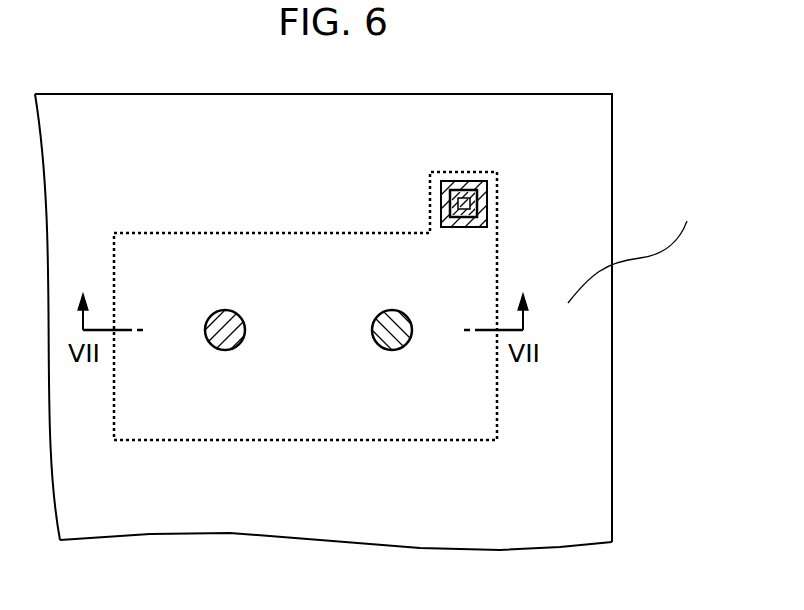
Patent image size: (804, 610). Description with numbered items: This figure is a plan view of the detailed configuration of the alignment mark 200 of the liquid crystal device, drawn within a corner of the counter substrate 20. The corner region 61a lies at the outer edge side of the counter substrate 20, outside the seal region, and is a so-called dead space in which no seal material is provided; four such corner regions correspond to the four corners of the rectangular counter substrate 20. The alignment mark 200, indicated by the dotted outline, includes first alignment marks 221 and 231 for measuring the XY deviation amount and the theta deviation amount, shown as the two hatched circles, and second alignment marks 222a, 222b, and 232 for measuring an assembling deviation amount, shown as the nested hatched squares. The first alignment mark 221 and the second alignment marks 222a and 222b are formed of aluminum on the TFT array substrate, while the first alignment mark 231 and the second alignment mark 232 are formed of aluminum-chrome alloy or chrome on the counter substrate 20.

The counter substrate 20 is at (495, 93).
The corner region 61a is at (638, 247).
The alignment mark 200 is at (446, 440).
The first alignment mark 221 is at (222, 350).
The first alignment mark 231 is at (387, 352).
The second alignment mark 232 is at (458, 202).
The second alignment mark 222a is at (482, 184).
The second alignment mark 222b is at (468, 207).